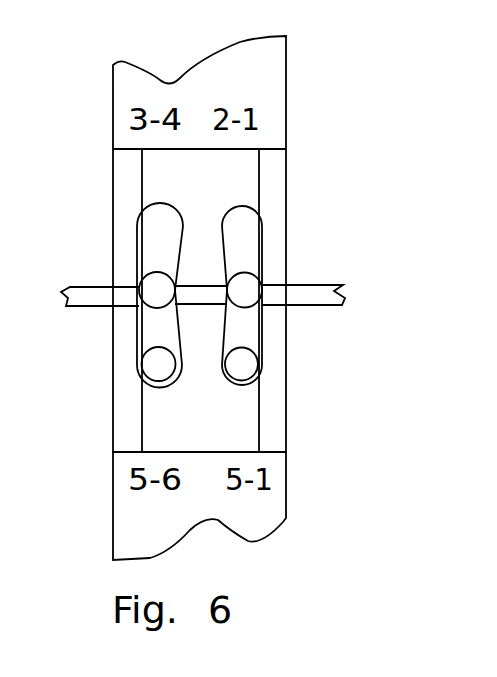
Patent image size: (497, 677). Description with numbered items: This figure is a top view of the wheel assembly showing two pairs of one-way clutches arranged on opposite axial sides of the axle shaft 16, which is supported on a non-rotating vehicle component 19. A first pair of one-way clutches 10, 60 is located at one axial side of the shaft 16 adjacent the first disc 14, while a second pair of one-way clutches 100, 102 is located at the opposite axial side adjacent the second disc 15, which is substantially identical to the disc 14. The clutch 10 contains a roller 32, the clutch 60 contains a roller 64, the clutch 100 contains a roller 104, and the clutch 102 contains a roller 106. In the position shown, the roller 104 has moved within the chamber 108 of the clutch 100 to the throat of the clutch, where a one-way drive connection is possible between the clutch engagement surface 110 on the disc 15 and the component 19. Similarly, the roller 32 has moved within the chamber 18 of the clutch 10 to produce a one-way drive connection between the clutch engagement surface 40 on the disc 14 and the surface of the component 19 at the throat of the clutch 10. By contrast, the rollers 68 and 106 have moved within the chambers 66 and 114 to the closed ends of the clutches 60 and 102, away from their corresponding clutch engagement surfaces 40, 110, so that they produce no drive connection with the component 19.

The one-way clutch 10 is at (198, 265).
The first disc 14 is at (273, 170).
The second disc 15 is at (123, 178).
The axle shaft 16 is at (330, 283).
The chamber 18 is at (250, 237).
The non-rotating vehicle component 19 is at (217, 177).
The roller 32 is at (252, 287).
The clutch engagement surface 40 is at (265, 252).
The one-way clutch 60 is at (221, 326).
The roller 64 is at (248, 355).
The chamber 66 is at (248, 323).
The roller 68 is at (247, 385).
The one-way clutch 100 is at (110, 265).
The one-way clutch 102 is at (152, 397).
The roller 104 is at (143, 284).
The roller 106 is at (147, 370).
The chamber 108 is at (150, 247).
The clutch engagement surface 110 is at (137, 232).
The chamber 114 is at (150, 325).